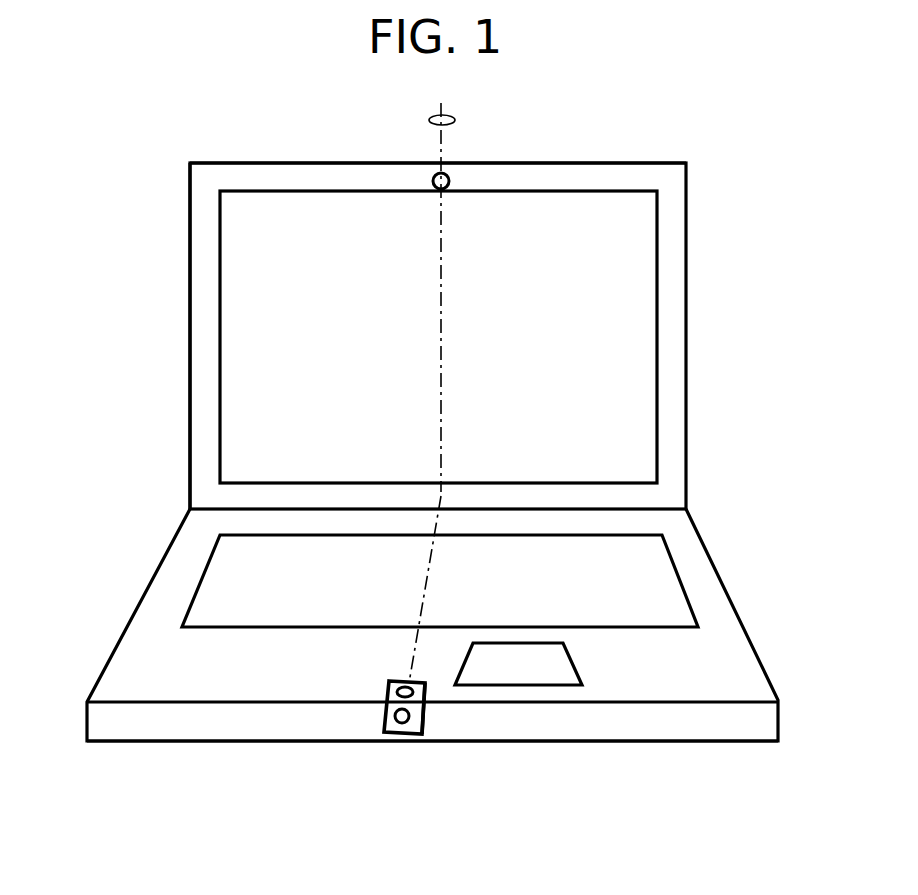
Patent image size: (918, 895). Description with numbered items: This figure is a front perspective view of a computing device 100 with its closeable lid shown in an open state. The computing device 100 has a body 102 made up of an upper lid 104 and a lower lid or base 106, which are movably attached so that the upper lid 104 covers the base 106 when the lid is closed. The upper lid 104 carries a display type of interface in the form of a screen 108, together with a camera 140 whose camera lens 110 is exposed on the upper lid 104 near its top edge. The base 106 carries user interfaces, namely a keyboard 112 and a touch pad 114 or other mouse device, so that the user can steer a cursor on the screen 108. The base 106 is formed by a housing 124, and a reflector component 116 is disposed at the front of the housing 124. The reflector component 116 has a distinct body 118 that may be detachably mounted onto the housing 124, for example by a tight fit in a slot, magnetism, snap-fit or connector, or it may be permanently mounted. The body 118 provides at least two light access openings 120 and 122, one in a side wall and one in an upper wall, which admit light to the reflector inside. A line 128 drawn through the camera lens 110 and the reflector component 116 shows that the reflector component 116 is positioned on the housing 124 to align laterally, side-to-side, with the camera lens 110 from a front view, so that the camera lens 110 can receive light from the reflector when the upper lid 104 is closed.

The computing device 100 is at (186, 139).
The body 102 is at (236, 163).
The upper lid 104 is at (200, 365).
The lower lid (base) 106 is at (150, 590).
The screen 108 is at (577, 373).
The camera lens 110 is at (450, 178).
The keyboard 112 is at (647, 588).
The touch pad 114 is at (532, 683).
The reflector component 116 is at (421, 716).
The body 118 is at (383, 715).
The light access opening 120 is at (402, 723).
The light access opening 122 is at (389, 684).
The housing 124 is at (163, 736).
The line 128 is at (457, 120).
The camera 140 is at (433, 181).